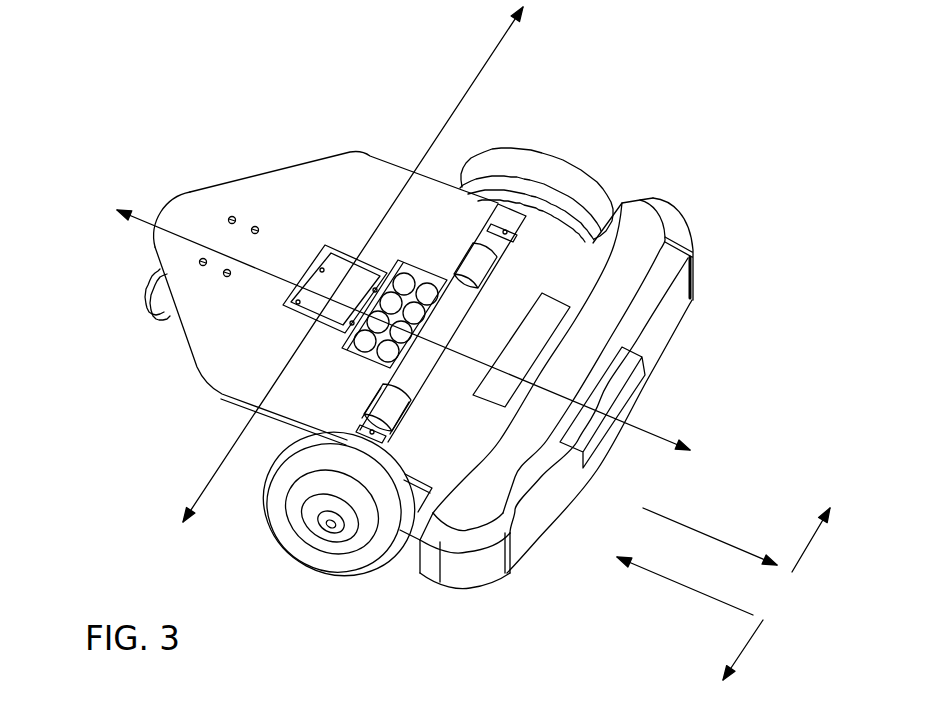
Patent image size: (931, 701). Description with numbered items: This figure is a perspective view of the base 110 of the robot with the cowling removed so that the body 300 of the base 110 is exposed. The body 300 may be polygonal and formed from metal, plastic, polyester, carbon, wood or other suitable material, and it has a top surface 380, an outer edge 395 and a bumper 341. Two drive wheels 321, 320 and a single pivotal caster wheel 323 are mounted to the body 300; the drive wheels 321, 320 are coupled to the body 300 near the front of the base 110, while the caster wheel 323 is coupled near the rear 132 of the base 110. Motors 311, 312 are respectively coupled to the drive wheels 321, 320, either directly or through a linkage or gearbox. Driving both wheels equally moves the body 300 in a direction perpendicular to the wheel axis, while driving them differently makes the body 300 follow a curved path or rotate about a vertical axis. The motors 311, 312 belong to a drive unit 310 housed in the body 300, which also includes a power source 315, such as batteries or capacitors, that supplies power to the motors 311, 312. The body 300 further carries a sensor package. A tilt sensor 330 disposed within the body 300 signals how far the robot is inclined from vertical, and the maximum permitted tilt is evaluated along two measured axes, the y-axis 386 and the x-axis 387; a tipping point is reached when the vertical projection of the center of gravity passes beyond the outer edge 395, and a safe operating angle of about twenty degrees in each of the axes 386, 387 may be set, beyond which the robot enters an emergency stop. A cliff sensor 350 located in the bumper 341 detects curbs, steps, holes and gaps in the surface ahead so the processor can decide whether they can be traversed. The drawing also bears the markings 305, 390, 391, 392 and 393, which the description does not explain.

The base 110 is at (681, 175).
The rear of the base 132 is at (192, 192).
The body 300 is at (217, 369).
The fasteners 305 is at (199, 262).
The drive unit 310 is at (488, 298).
The motor 311 is at (459, 268).
The motor 312 is at (392, 400).
The power source 315 is at (420, 262).
The drive wheel 320 is at (262, 483).
The drive wheel 321 is at (541, 147).
The pivotal caster wheel 323 is at (157, 316).
The tilt sensor 330 is at (566, 305).
The bumper 341 is at (681, 307).
The cliff sensor 350 is at (537, 537).
The top surface 380 is at (302, 212).
The y-axis 386 is at (463, 97).
The x-axis 387 is at (153, 226).
The forward direction arrow 390 is at (690, 522).
The upward direction arrow 391 is at (797, 562).
The downward direction arrow 392 is at (743, 650).
The rearward direction arrow 393 is at (665, 577).
The outer edge 395 is at (463, 578).